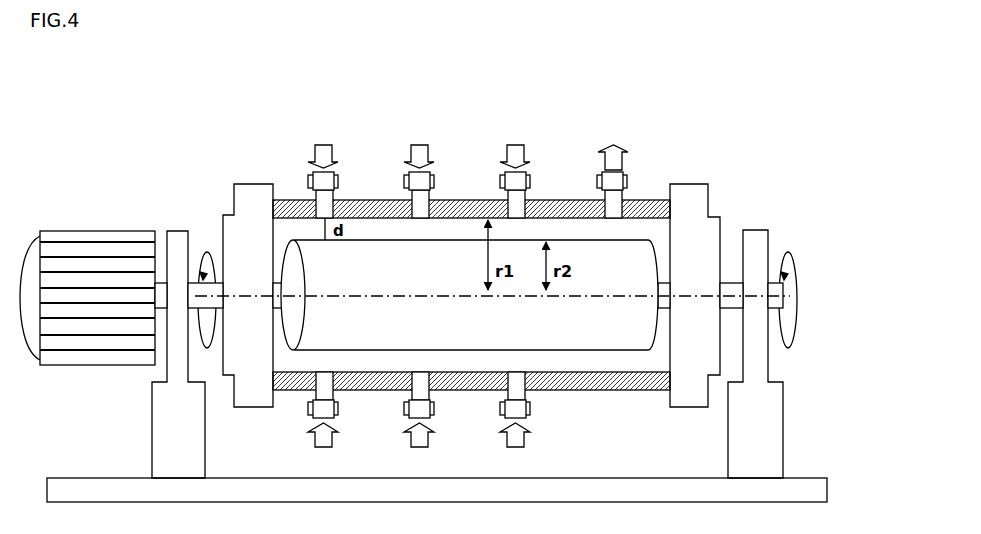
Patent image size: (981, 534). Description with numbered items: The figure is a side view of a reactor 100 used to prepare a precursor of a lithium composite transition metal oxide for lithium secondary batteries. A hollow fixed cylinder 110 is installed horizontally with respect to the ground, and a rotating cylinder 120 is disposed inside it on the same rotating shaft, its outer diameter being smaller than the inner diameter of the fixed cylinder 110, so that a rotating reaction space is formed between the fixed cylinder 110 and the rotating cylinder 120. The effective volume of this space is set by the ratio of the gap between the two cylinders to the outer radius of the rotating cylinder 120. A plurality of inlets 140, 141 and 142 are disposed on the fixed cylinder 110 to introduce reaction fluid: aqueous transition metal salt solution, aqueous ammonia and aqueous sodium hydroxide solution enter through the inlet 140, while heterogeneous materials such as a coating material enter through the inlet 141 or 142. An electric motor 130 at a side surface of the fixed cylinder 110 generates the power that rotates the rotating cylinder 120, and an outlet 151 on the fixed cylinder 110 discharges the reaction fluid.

The reactor 100 is at (708, 170).
The hollow fixed cylinder 110 is at (573, 392).
The rotating cylinder 120 is at (635, 354).
The electric motor 130 is at (83, 369).
The inlet 140 is at (325, 137).
The inlet 141 is at (422, 138).
The inlet 142 is at (519, 138).
The gas outlet nozzle 151 is at (630, 138).